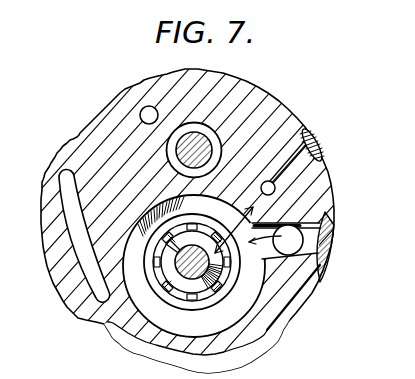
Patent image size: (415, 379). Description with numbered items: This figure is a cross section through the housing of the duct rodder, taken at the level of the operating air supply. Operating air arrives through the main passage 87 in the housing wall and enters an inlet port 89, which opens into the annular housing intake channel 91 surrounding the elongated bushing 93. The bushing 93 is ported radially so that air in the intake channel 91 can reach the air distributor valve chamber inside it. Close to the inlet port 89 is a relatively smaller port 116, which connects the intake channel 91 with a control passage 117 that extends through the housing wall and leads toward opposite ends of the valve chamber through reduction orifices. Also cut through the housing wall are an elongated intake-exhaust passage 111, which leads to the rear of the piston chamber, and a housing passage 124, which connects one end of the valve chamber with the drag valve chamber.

The main passage 87 is at (296, 233).
The inlet port 89 is at (266, 249).
The annular housing intake channel 91 is at (238, 303).
The elongated bushing 93 is at (158, 243).
The housing intake-exhaust passage 111 is at (66, 258).
The port 116 is at (244, 205).
The control passage 117 is at (261, 186).
The housing passage 124 is at (148, 106).